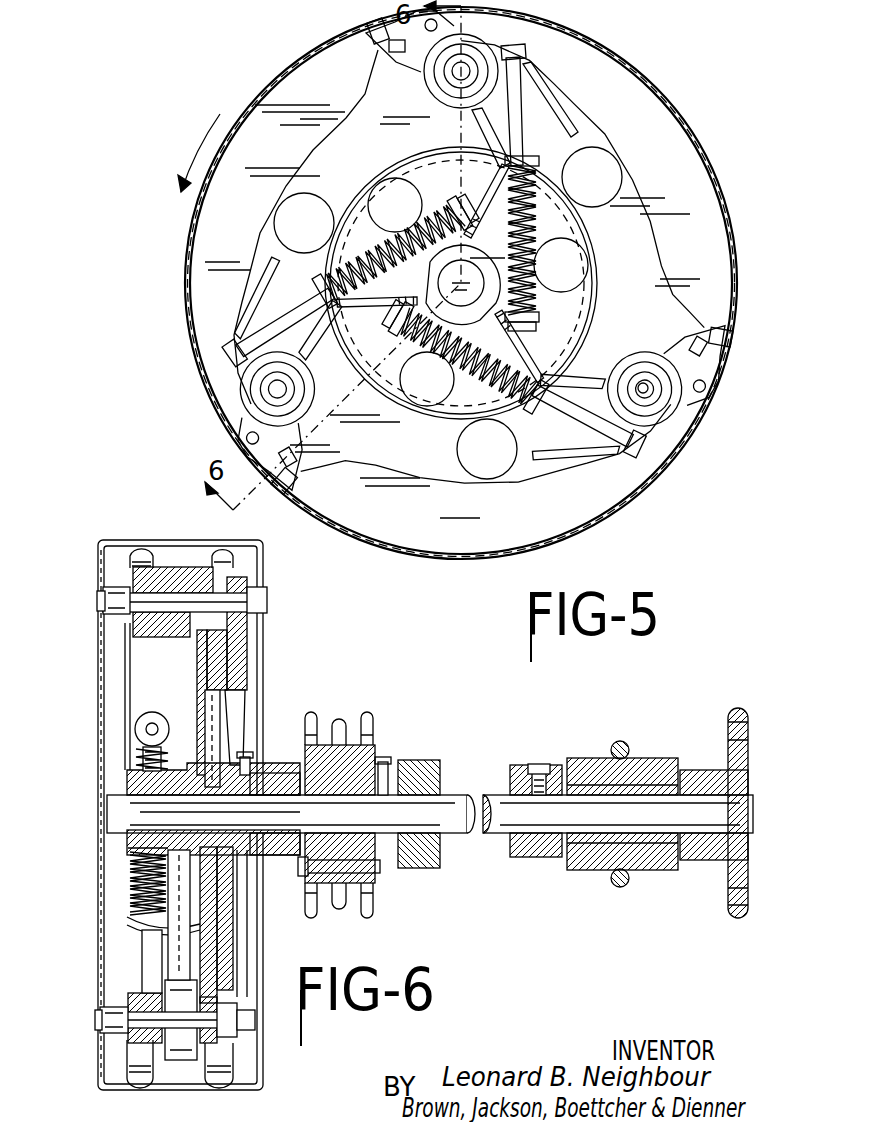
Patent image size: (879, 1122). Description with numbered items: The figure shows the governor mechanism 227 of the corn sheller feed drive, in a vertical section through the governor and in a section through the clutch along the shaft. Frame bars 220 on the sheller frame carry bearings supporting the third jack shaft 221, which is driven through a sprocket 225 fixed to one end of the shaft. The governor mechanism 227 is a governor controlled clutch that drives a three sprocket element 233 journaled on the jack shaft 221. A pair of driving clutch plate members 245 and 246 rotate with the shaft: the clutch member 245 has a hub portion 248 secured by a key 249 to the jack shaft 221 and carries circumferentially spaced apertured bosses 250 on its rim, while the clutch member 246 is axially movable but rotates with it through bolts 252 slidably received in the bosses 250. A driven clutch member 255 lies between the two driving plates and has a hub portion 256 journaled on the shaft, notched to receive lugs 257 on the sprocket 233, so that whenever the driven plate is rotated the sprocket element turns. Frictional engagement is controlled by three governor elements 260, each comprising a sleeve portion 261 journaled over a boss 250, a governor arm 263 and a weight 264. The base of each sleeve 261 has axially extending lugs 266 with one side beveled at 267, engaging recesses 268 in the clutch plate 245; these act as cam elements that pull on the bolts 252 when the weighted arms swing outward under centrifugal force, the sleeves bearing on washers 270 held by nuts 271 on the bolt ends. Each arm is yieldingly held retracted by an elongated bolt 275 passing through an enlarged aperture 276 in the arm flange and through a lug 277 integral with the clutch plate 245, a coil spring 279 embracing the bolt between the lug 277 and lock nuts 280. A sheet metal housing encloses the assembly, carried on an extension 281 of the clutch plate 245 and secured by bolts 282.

In FIG. 6, the frame bars 220 is at (658, 772).
In FIG. 5, the third jack shaft 221 is at (466, 300).
In FIG. 6, the third jack shaft 221 is at (448, 805).
In FIG. 6, the sprocket 225 is at (730, 868).
In FIG. 6, the governor mechanism 227 is at (100, 842).
In FIG. 6, the three sprocket element 233 is at (336, 722).
In FIG. 6, the driving clutch plate member 245 is at (150, 650).
In FIG. 6, the driving clutch plate member 246 is at (240, 660).
In FIG. 5, the hub portion 248 is at (440, 285).
In FIG. 6, the hub portion 248 is at (136, 780).
In FIG. 6, the key 249 is at (128, 792).
In FIG. 6, the apertured bosses 250 is at (140, 625).
In FIG. 6, the bolts 252 is at (258, 602).
In FIG. 6, the driven clutch member 255 is at (245, 700).
In FIG. 6, the hub portion 256 is at (278, 790).
In FIG. 6, the lugs 257 is at (276, 842).
In FIG. 5, the governor element 260 is at (548, 80).
In FIG. 6, the sleeve portion 261 is at (140, 562).
In FIG. 5, the governor arm 263 is at (575, 134).
In FIG. 5, the weight 264 is at (592, 177).
In FIG. 6, the lugs 266 is at (180, 1063).
In FIG. 6, the beveled side 267 is at (183, 997).
In FIG. 6, the recesses 268 is at (223, 1050).
In FIG. 5, the washers 270 is at (640, 382).
In FIG. 6, the washers 270 is at (103, 592).
In FIG. 6, the nuts 271 is at (105, 612).
In FIG. 5, the elongated bolt 275 is at (263, 320).
In FIG. 5, the enlarged aperture 276 is at (235, 345).
In FIG. 5, the lug 277 is at (305, 278).
In FIG. 5, the coil spring 279 is at (353, 235).
In FIG. 5, the lock nuts 280 is at (445, 208).
In FIG. 5, the extension 281 is at (378, 56).
In FIG. 5, the bolts 282 is at (367, 22).